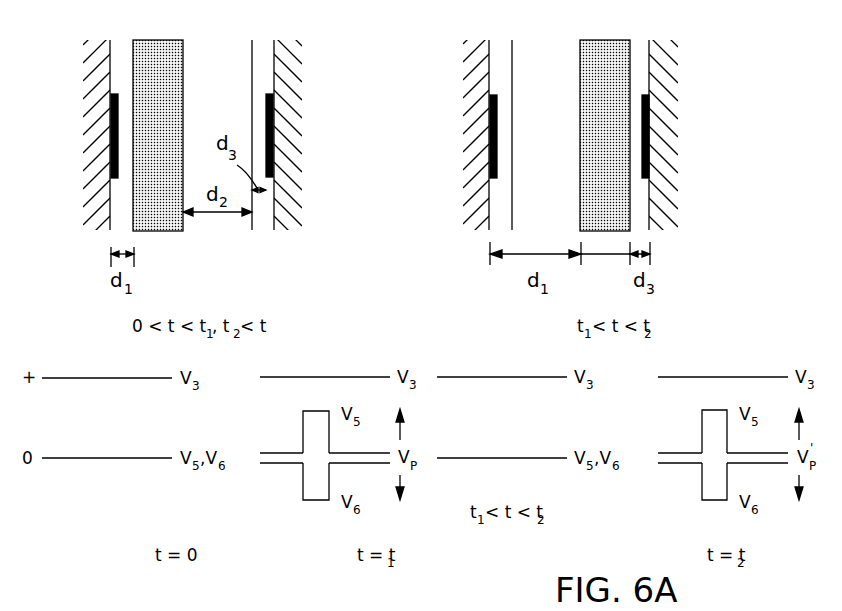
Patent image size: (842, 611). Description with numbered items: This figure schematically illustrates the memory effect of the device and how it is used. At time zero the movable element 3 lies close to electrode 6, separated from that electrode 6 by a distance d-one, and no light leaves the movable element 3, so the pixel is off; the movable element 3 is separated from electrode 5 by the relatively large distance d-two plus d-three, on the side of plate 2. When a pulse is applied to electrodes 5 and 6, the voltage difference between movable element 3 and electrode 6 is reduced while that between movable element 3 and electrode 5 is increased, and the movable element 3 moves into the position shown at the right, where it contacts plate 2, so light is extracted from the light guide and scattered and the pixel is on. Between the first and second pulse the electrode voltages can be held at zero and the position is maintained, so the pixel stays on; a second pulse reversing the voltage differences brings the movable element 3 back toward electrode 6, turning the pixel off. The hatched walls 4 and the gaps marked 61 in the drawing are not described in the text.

The plate 2 is at (490, 140).
The movable element 3 is at (155, 202).
The first wall / substrate 4 is at (273, 139).
The electrode 5 is at (272, 108).
The electrode 6 is at (112, 108).
The gaps between dielectric and walls 61 is at (263, 40).